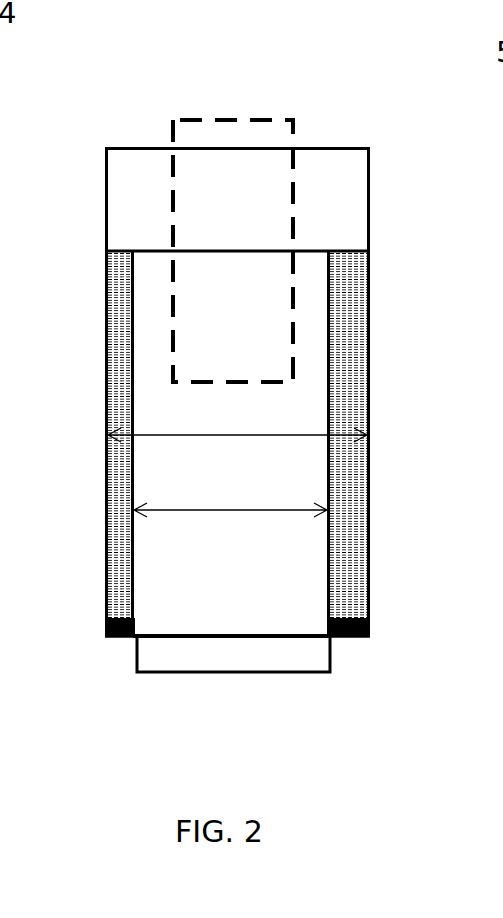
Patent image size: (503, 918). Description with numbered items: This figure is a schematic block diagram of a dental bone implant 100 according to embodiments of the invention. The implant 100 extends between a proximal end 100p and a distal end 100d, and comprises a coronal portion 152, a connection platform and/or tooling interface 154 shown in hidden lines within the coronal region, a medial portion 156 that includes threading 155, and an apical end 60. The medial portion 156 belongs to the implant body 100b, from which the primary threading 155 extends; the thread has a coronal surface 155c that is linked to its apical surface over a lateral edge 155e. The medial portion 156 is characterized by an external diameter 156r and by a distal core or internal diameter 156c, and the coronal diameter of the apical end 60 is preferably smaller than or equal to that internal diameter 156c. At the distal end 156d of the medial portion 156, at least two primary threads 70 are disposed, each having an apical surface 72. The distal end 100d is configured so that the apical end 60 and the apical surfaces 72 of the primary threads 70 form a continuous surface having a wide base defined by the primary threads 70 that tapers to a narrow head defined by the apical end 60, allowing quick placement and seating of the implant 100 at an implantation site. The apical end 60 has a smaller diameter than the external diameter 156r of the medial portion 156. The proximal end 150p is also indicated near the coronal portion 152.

The dental bone implant 100 is at (350, 78).
The implant body 100b is at (403, 278).
The distal end 100d is at (124, 736).
The proximal end 100p is at (130, 150).
The proximal end of cartridge housing 150p is at (34, 60).
The coronal portion 152 is at (365, 220).
The connection platform and/or tooling interface 154 is at (285, 66).
The threading 155 is at (355, 343).
The coronal surface 155c is at (21, 332).
The lateral edge 155e is at (21, 423).
The medial portion 156 is at (340, 465).
The external diameter 156r is at (198, 440).
The distal core/internal diameter 156c is at (207, 517).
The distal end of medial portion 156d is at (235, 640).
The apical end 60 is at (248, 672).
The primary thread 70 is at (369, 628).
The apical surface 72 is at (343, 638).